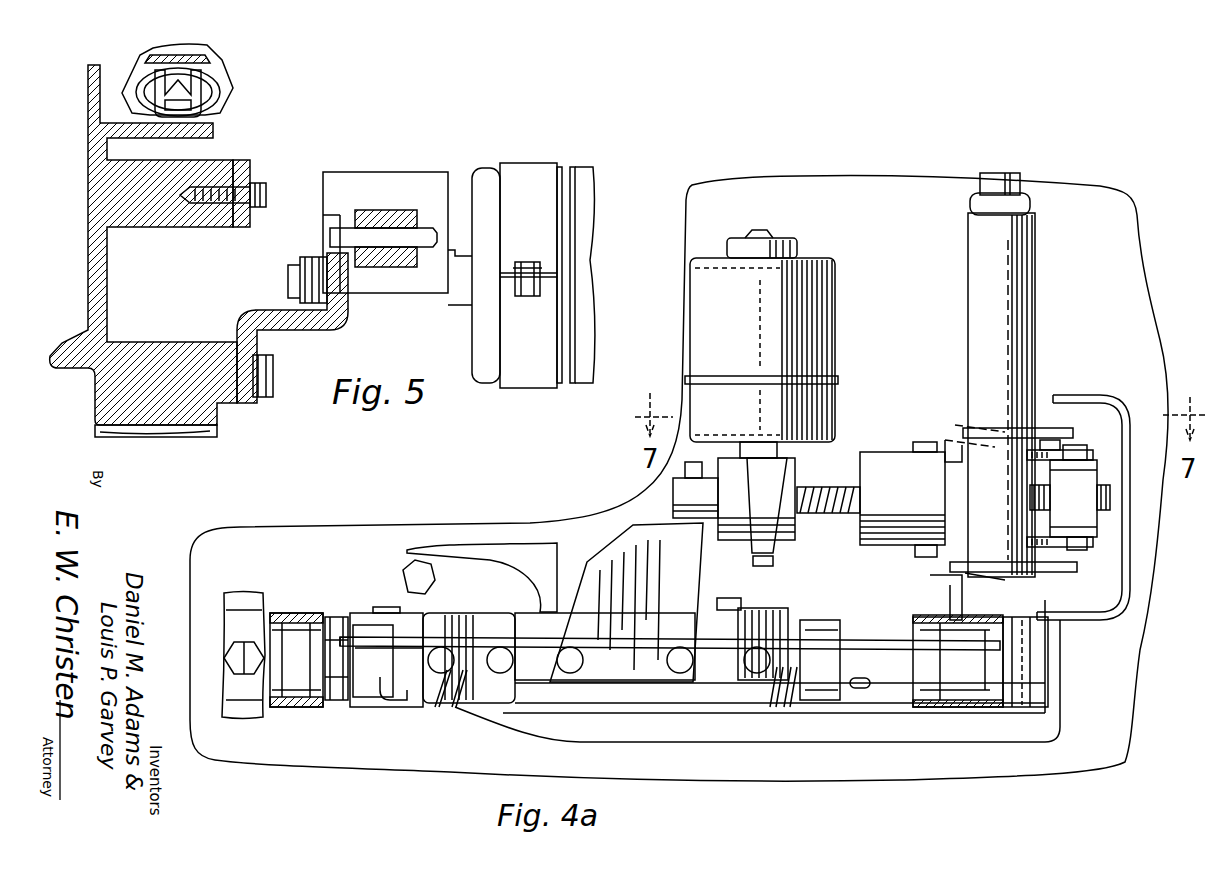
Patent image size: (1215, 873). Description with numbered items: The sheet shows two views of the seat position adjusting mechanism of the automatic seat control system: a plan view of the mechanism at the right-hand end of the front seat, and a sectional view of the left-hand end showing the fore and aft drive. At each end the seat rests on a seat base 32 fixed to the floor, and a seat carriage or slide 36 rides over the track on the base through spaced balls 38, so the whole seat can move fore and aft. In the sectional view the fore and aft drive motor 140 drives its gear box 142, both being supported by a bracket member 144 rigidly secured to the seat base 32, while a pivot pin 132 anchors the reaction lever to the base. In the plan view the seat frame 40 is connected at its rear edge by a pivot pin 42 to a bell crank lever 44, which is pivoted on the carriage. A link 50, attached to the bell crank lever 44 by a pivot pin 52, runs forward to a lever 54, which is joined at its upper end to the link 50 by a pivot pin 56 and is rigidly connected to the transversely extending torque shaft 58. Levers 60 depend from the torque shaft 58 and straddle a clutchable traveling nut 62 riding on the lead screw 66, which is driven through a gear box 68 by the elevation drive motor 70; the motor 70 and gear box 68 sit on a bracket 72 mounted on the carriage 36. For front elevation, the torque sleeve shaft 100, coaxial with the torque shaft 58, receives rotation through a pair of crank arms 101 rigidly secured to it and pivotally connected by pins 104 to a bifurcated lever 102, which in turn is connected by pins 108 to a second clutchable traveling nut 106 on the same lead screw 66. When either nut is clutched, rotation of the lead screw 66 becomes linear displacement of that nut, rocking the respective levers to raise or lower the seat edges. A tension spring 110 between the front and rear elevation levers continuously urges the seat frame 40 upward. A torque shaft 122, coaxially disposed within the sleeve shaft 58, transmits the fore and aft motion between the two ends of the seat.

In FIG. 5, the seat base 32 is at (103, 393).
In FIG. 5, the balls 38 is at (203, 80).
In FIG. 5, the seat carriage 36 is at (220, 110).
In FIG. 5, the pivot pin 132 is at (262, 183).
In FIG. 5, the bracket member 144 is at (266, 316).
In FIG. 5, the gear box 142 is at (383, 175).
In FIG. 5, the fore and aft drive motor 140 is at (560, 170).
In FIG. 4A, the elevation drive motor 70 is at (830, 320).
In FIG. 4A, the gear box 68 is at (775, 525).
In FIG. 4A, the lead screw 66 is at (840, 487).
In FIG. 4A, the clutchable traveling nut 106 is at (880, 455).
In FIG. 4A, the pins 108 is at (924, 442).
In FIG. 4A, the torque sleeve shaft 100 is at (1027, 303).
In FIG. 4A, the torque shaft 58 is at (983, 208).
In FIG. 4A, the torque shaft 122 is at (1017, 186).
In FIG. 4A, the crank arms 101 is at (1040, 428).
In FIG. 4A, the pins 104 is at (1065, 400).
In FIG. 4A, the bifurcated lever 102 is at (975, 425).
In FIG. 4A, the clutchable traveling nut 62 is at (1090, 523).
In FIG. 4A, the levers 60 is at (1090, 452).
In FIG. 4A, the seat frame 40 is at (262, 600).
In FIG. 4A, the pivot pin 42 is at (295, 613).
In FIG. 4A, the bell crank lever 44 is at (340, 617).
In FIG. 4A, the pivot pin 52 is at (383, 612).
In FIG. 4A, the tension spring 110 is at (447, 707).
In FIG. 4A, the link 50 is at (675, 640).
In FIG. 4A, the bracket 72 is at (612, 560).
In FIG. 4A, the pivot pin 56 is at (993, 667).
In FIG. 4A, the lever 54 is at (1033, 653).